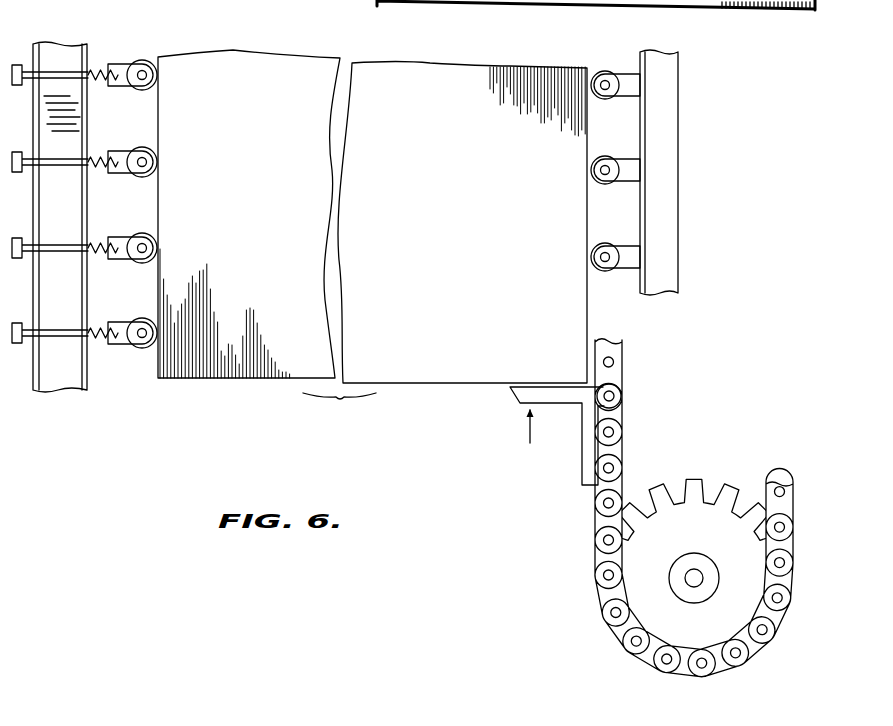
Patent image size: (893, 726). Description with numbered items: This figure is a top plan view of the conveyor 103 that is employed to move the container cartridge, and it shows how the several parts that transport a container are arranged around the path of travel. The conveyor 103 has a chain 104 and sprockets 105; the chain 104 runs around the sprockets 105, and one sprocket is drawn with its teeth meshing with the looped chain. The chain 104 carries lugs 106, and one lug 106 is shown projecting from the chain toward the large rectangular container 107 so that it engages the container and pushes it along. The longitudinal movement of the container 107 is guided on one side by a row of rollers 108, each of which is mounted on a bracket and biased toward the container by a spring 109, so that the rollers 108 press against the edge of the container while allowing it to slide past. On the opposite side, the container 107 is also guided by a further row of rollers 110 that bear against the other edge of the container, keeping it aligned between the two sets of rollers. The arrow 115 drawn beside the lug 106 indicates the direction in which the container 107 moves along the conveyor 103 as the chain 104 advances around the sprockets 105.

The conveyor 103 is at (590, 566).
The chain 104 is at (597, 526).
The sprockets 105 is at (704, 500).
The lugs 106 is at (582, 468).
The container 107 is at (462, 385).
The rollers 108 is at (135, 60).
The springs 109 is at (96, 240).
The rollers 110 is at (612, 68).
The arrow 115 is at (530, 443).